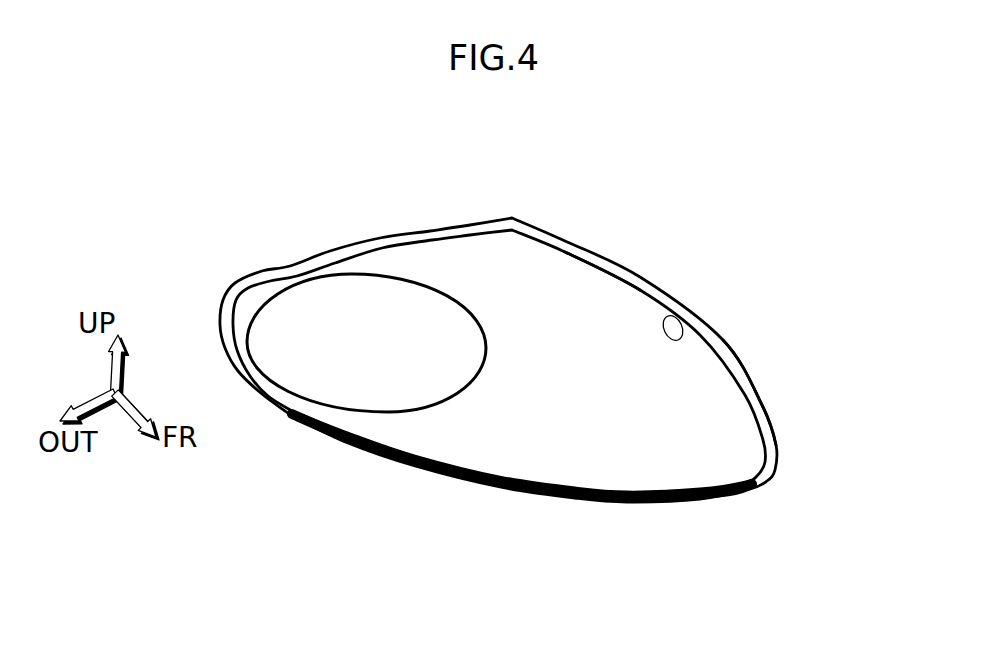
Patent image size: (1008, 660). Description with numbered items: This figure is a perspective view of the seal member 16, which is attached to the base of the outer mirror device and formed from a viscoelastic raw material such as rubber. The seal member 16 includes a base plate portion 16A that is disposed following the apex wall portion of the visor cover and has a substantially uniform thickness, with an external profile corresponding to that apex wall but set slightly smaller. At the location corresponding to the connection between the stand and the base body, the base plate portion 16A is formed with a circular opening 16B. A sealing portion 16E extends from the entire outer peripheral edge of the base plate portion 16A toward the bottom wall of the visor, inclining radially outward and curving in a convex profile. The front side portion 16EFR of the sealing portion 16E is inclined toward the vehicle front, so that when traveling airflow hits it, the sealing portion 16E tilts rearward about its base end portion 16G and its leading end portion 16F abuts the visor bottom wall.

The seal member 16 is at (686, 232).
The base plate portion 16A is at (557, 282).
The circular opening 16B is at (410, 290).
The sealing portion 16E is at (753, 390).
The front side portion 16EFR is at (777, 474).
The leading end portion 16F is at (617, 262).
The base end portion 16G is at (686, 323).